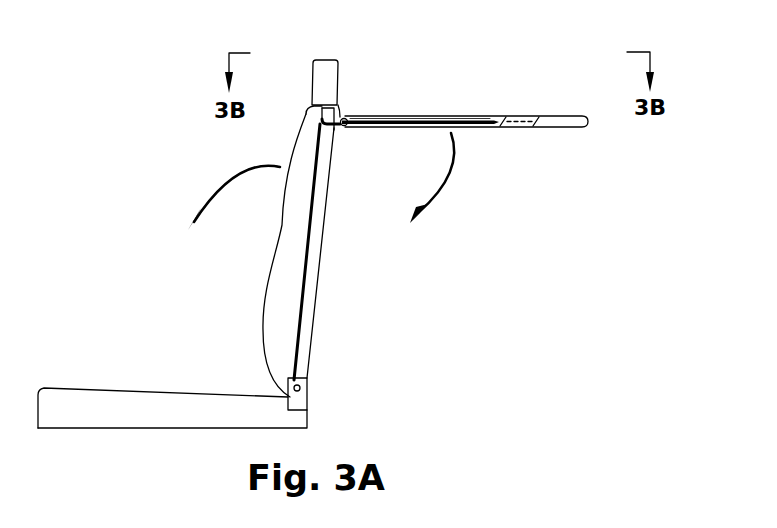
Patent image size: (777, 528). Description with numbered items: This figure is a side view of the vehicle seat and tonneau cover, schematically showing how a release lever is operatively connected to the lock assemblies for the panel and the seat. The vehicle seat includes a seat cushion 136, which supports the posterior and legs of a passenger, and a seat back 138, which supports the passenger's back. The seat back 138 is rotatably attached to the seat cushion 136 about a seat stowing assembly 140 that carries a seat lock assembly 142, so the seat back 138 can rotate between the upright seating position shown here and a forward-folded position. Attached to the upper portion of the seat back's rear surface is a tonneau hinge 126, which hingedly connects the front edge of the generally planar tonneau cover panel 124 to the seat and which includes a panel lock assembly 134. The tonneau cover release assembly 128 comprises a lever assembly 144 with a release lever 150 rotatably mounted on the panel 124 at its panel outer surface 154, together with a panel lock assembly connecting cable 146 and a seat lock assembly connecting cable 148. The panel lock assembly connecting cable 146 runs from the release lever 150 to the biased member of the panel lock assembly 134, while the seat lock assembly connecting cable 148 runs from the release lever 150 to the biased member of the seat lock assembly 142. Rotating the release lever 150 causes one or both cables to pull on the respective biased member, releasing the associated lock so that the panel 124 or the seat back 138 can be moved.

The tonneau cover panel 124 is at (577, 116).
The tonneau hinge 126 is at (342, 114).
The tonneau cover release assembly 128 is at (471, 50).
The panel lock assembly 134 is at (313, 113).
The seat cushion 136 is at (77, 405).
The seat back 138 is at (279, 310).
The seat stowing assembly 140 is at (300, 402).
The seat lock assembly 142 is at (303, 387).
The lever assembly 144 is at (515, 92).
The panel lock assembly connecting cable 146 is at (380, 116).
The seat lock assembly connecting cable 148 is at (303, 292).
The release lever 150 is at (514, 127).
The panel outer surface 154 is at (460, 117).